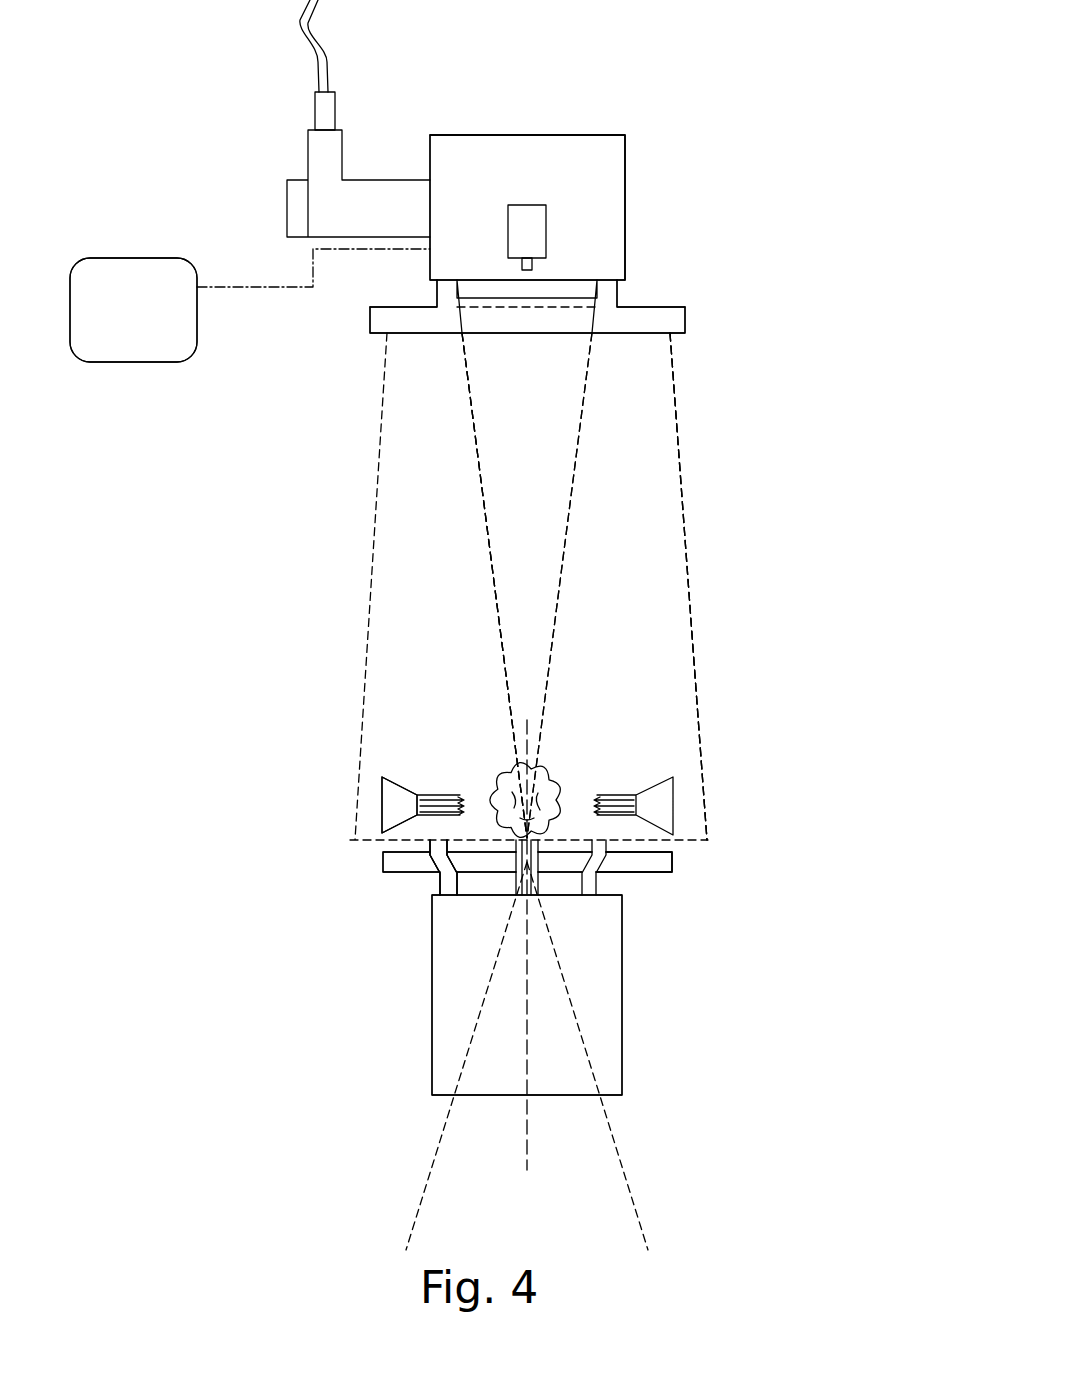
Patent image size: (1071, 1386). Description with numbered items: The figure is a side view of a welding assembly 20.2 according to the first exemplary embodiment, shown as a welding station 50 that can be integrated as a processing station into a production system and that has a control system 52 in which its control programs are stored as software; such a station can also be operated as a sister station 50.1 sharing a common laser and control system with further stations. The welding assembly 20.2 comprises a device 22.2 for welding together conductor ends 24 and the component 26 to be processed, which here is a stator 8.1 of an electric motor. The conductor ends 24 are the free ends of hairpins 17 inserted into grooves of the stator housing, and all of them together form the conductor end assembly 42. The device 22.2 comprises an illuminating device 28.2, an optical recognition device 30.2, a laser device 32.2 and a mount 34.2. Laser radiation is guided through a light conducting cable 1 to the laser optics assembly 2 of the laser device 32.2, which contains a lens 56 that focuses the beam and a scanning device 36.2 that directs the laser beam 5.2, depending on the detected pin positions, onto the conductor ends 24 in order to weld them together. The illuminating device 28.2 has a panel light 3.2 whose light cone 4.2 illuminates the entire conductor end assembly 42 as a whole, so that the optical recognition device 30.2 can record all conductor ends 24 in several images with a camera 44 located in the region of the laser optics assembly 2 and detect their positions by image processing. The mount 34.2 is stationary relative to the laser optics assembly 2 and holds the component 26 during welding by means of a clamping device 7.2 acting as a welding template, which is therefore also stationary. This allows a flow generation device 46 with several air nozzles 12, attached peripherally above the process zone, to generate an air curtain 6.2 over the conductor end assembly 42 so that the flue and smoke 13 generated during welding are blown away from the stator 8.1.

The light conducting cable 1 is at (323, 48).
The laser optics assembly 2 is at (600, 170).
The panel light 3.2 is at (675, 323).
The light cone 4.2 is at (677, 448).
The laser beam 5.2 is at (535, 610).
The air curtain 6.2 is at (700, 775).
The clamping device 7.2 is at (663, 860).
The stator 8.1 is at (607, 1000).
The air nozzle 12 is at (395, 797).
The flue/smoke 13 is at (548, 768).
The hairpins 17 is at (427, 880).
The welding assembly 20.2 is at (779, 220).
The device for welding together conductor ends 22.2 is at (768, 118).
The conductor ends 24 is at (435, 853).
The component 26 is at (440, 1023).
The illuminating device 28.2 is at (642, 307).
The optical recognition device 30.2 is at (130, 270).
The laser device 32.2 is at (632, 128).
The mount 34.2 is at (690, 843).
The scanning device 36.2 is at (605, 147).
The conductor end assembly 42 is at (439, 826).
The camera 44 is at (525, 210).
The flow generation device 46 is at (370, 779).
The welding station 50 is at (790, 265).
The sister station 50.1 is at (790, 355).
The control system 52 is at (132, 350).
The lens 56 is at (512, 290).